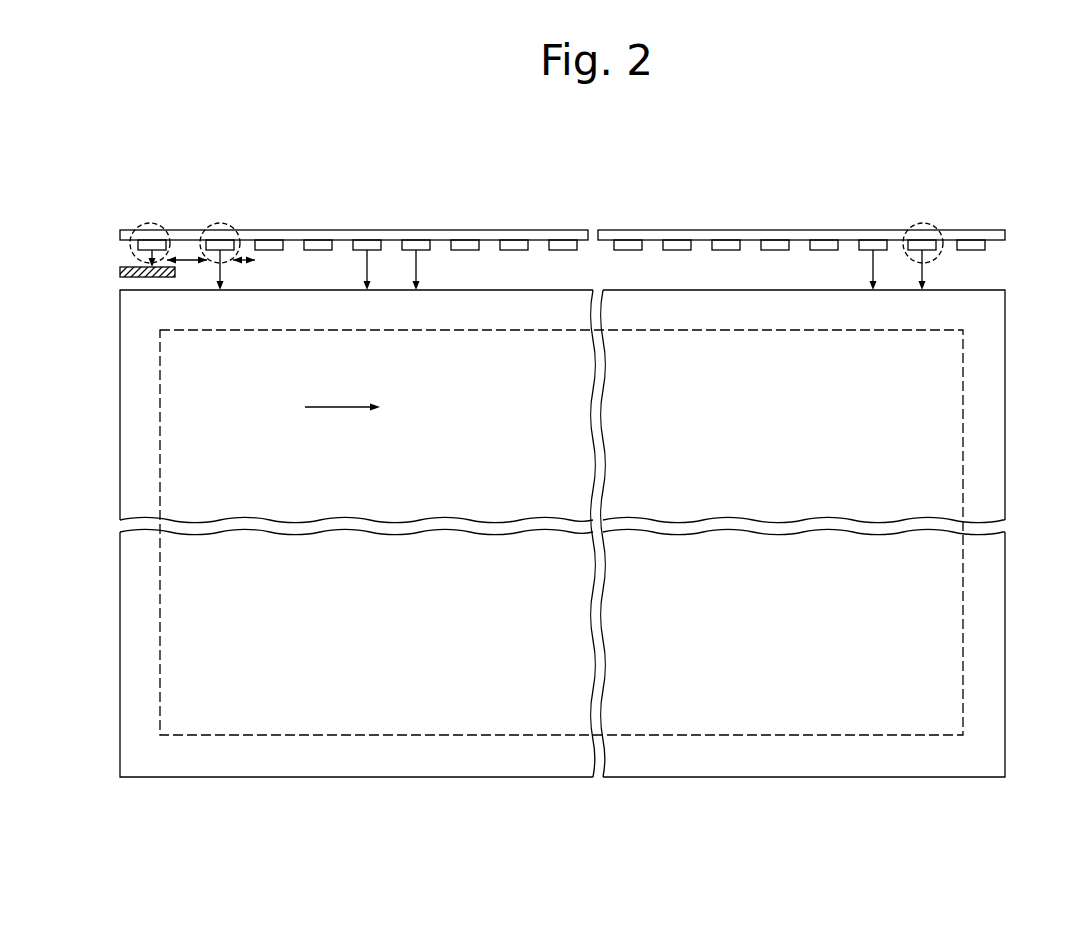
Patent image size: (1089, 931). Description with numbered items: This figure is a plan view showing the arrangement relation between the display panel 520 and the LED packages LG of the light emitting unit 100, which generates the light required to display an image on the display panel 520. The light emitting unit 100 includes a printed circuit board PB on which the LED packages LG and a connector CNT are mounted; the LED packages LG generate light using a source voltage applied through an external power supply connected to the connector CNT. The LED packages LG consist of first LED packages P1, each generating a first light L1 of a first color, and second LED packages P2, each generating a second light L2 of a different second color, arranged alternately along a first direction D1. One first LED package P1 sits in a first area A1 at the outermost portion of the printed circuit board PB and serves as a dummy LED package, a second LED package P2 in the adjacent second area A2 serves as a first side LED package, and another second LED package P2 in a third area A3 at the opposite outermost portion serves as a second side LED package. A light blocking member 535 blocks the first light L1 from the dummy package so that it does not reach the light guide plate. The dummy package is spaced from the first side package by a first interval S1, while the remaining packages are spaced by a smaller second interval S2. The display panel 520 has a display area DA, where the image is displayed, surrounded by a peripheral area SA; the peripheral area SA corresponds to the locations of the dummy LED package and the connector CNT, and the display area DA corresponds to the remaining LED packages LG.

The light emitting unit 100 is at (1005, 141).
The display panel 520 is at (1005, 405).
The light blocking member 535 is at (120, 270).
The LED packages LG is at (155, 176).
The printed circuit board PB is at (660, 237).
The connector CNT is at (973, 243).
The first LED packages P1 is at (152, 243).
The second LED packages P2 is at (220, 243).
The first area A1 is at (145, 227).
The second area A2 is at (212, 227).
The third area A3 is at (935, 227).
The first light L1 is at (148, 262).
The second light L2 is at (584, 271).
The first interval S1 is at (187, 271).
The second interval S2 is at (255, 270).
The peripheral area SA is at (1005, 368).
The display area DA is at (963, 368).
The first direction D1 is at (359, 407).